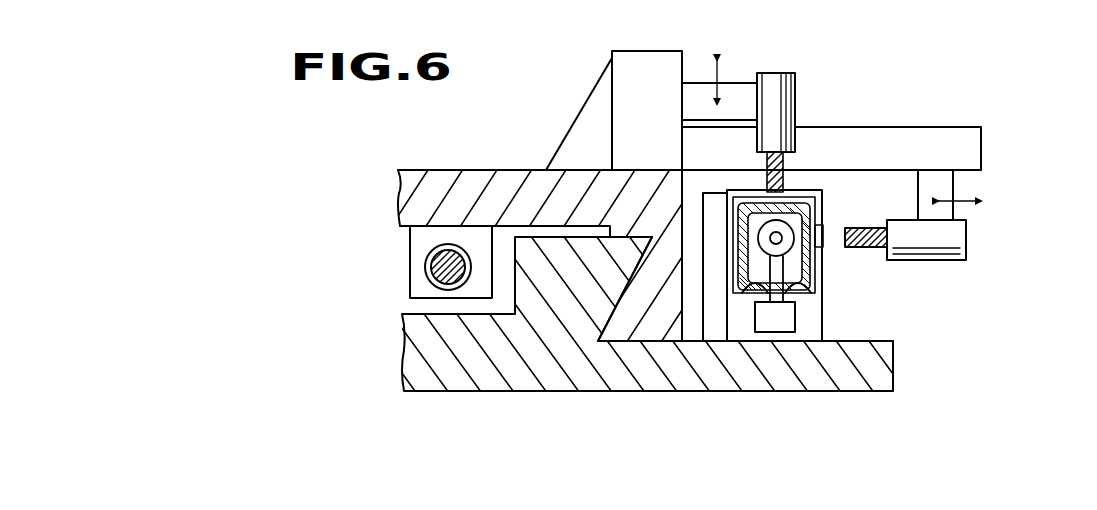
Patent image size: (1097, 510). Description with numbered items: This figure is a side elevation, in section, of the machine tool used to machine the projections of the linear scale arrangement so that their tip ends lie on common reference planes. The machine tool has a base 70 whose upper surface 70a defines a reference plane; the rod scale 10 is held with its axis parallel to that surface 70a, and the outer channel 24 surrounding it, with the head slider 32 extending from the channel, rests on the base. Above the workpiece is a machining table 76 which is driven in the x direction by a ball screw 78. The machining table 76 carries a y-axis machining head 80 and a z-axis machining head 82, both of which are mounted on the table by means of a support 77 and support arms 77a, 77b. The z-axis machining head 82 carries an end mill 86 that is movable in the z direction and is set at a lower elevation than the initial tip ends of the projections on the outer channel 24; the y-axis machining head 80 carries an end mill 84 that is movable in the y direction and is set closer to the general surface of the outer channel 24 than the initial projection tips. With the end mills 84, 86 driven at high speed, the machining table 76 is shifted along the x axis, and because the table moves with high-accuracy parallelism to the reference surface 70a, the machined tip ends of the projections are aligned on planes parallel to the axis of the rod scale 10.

The scale 10 is at (778, 240).
The outer channel 24 is at (742, 289).
The head slider 32 is at (782, 322).
The base 70 is at (880, 375).
The surface 70a is at (862, 340).
The machining table 76 is at (487, 170).
The support 77 is at (645, 60).
The support arm 77a is at (738, 97).
The support arm 77b is at (946, 140).
The ball screw 78 is at (435, 267).
The y-axis machining head 80 is at (966, 243).
The z-axis machining head 82 is at (796, 85).
The end mill 84 is at (862, 228).
The end mill 86 is at (790, 165).